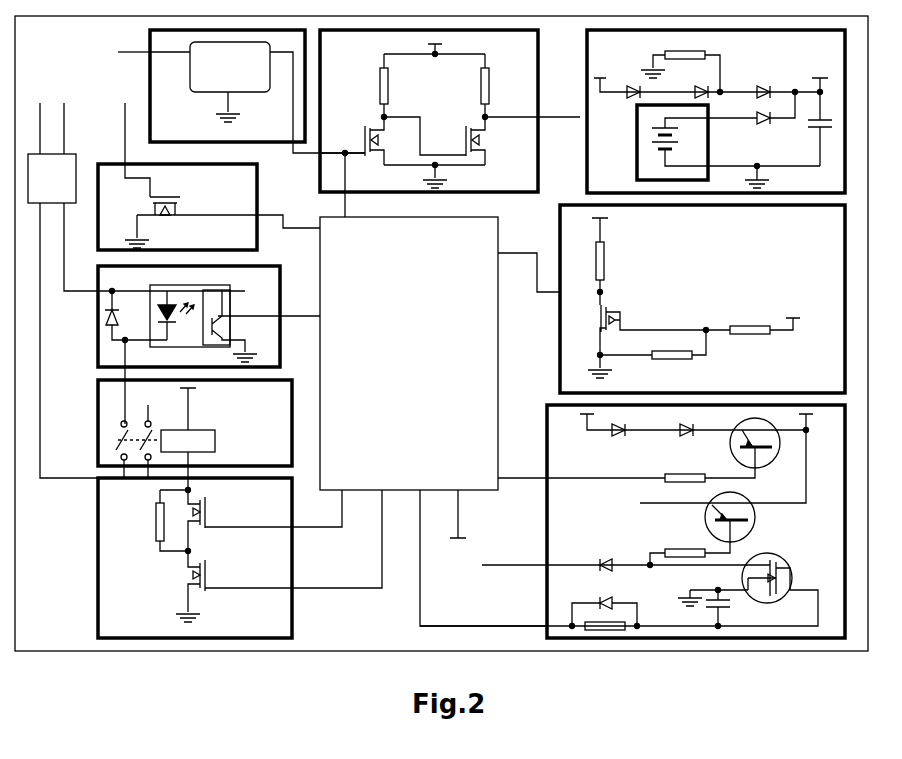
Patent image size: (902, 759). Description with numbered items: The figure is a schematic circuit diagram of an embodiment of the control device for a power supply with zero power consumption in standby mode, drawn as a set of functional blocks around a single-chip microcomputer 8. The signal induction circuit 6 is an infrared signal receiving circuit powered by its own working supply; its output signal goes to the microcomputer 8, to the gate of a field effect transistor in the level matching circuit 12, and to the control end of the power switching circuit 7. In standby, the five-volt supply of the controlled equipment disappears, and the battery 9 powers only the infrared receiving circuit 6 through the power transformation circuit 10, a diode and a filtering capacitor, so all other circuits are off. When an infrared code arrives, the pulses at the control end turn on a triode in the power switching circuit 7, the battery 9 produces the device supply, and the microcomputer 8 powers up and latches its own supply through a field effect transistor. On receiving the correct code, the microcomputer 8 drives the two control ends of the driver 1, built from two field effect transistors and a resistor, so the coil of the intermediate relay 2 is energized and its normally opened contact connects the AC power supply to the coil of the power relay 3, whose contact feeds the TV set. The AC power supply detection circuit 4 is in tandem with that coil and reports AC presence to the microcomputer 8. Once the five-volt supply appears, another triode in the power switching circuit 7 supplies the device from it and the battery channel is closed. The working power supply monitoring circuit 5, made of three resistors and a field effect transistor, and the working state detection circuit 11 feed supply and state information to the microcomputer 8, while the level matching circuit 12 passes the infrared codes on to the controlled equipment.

The driver 1 is at (195, 558).
The intermediate relay 2 is at (195, 428).
The power relay 3 is at (136, 281).
The AC power supply detection circuit 4 is at (209, 345).
The working power supply monitoring circuit 5 is at (702, 299).
The signal induction circuit 6 is at (241, 123).
The power switching circuit 7 is at (632, 518).
The single-chip microcomputer 8 is at (382, 418).
The battery 9 is at (687, 142).
The power transformation circuit 10 is at (716, 111).
The working state detection circuit 11 is at (209, 176).
The level matching circuit 12 is at (450, 111).